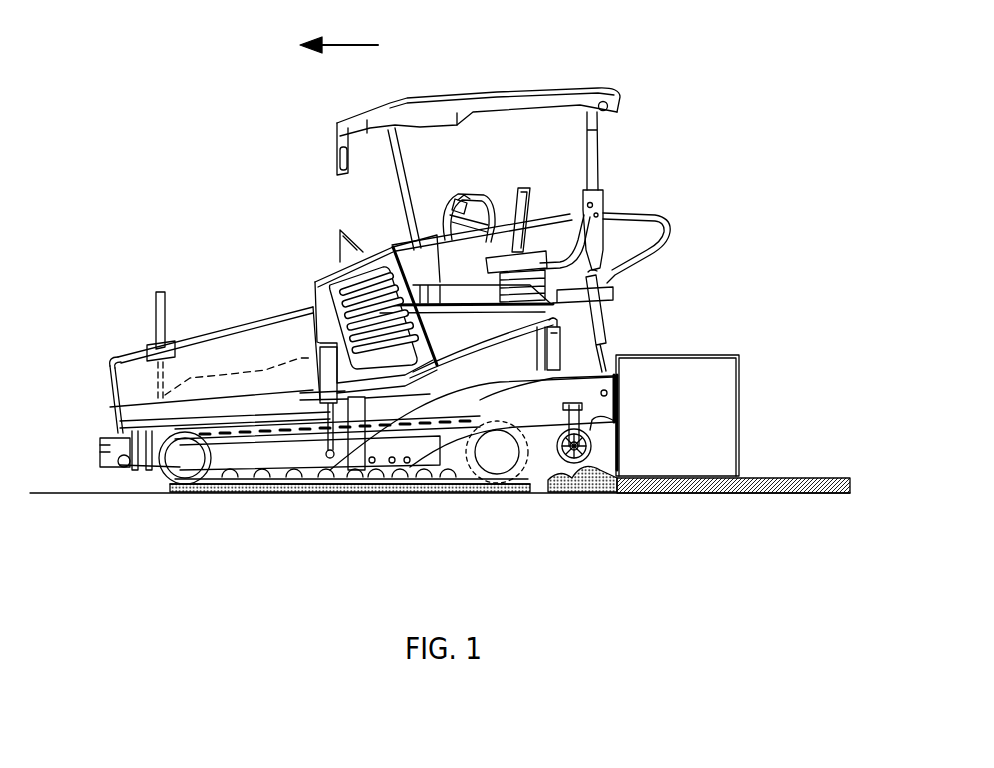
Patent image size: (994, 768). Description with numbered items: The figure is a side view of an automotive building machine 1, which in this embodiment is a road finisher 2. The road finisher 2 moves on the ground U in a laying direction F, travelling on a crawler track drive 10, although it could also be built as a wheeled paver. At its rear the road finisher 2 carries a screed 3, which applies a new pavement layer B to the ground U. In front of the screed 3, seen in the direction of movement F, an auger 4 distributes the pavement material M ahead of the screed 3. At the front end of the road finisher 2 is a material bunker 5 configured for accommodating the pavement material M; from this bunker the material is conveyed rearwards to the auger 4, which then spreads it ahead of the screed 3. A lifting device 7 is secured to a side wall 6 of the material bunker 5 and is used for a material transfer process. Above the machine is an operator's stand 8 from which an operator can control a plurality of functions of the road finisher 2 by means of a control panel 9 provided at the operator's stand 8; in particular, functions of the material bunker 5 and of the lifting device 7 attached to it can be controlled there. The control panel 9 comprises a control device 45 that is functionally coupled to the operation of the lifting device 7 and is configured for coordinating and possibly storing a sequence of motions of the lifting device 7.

The automotive building machine 1 is at (682, 80).
The road finisher 2 is at (324, 260).
The screed 3 is at (685, 427).
The auger 4 is at (578, 462).
The material bunker 5 is at (252, 312).
The side wall 6 is at (116, 359).
The lifting device 7 is at (137, 310).
The operator's stand 8 is at (565, 156).
The control panel 9 is at (470, 196).
The crawler track drive 10 is at (293, 503).
The control device 45 is at (454, 194).
The pavement material M is at (205, 377).
The pavement layer B is at (807, 477).
The ground U is at (57, 495).
The laying direction F is at (339, 35).